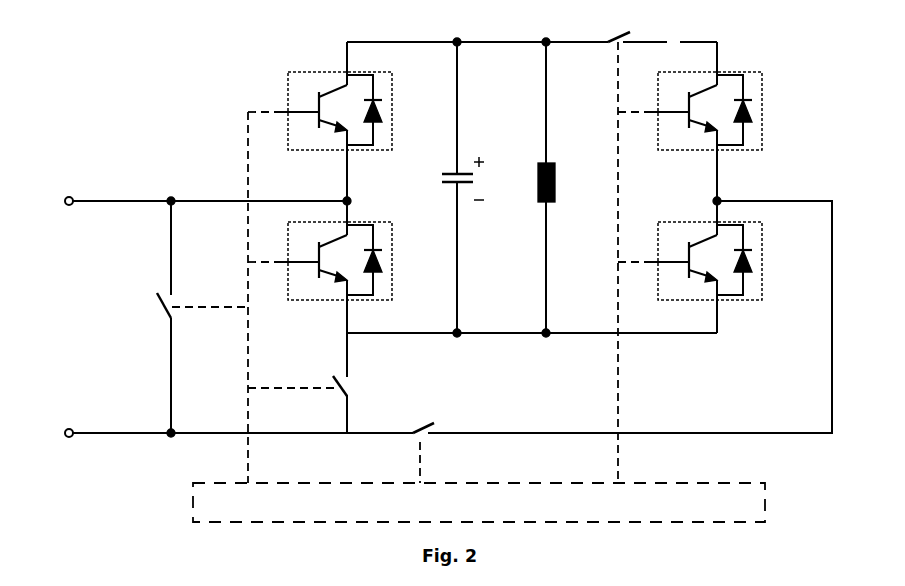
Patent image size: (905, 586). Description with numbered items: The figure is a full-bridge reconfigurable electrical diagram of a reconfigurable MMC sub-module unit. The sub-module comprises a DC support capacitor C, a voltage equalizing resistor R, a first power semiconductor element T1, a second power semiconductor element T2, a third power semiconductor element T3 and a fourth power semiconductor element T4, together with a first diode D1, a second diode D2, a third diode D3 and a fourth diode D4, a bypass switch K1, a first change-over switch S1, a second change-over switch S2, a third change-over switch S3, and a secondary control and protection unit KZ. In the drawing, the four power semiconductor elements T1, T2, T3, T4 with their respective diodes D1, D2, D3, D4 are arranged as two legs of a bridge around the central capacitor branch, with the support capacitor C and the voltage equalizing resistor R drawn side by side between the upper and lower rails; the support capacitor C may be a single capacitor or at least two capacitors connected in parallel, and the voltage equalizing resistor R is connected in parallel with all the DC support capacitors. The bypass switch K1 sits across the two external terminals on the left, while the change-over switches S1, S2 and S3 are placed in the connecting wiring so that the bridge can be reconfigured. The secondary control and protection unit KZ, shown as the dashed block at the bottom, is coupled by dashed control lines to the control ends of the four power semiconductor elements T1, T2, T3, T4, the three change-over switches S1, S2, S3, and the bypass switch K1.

The first power semiconductor element T1 is at (320, 121).
The second power semiconductor element T2 is at (320, 267).
The third power semiconductor element T3 is at (690, 121).
The fourth power semiconductor element T4 is at (690, 267).
The first diode D1 is at (386, 110).
The second diode D2 is at (386, 260).
The third diode D3 is at (758, 110).
The fourth diode D4 is at (758, 260).
The bypass switch K1 is at (185, 317).
The first change-over switch S1 is at (297, 383).
The second change-over switch S2 is at (408, 453).
The third change-over switch S3 is at (626, 25).
The DC support capacitor C is at (451, 187).
The voltage equalizing resistor R is at (536, 187).
The secondary control and protection unit KZ is at (479, 502).